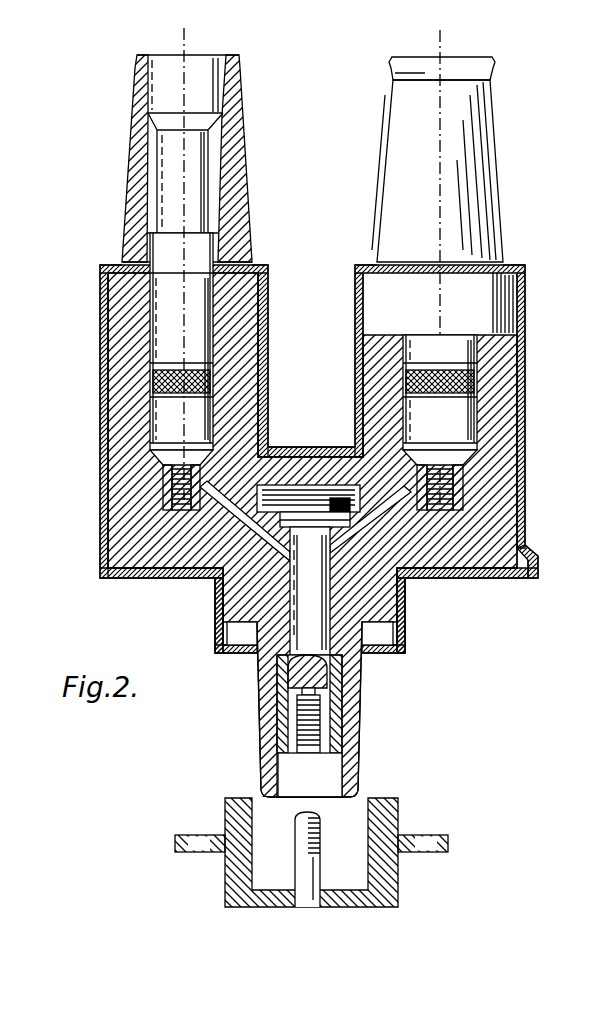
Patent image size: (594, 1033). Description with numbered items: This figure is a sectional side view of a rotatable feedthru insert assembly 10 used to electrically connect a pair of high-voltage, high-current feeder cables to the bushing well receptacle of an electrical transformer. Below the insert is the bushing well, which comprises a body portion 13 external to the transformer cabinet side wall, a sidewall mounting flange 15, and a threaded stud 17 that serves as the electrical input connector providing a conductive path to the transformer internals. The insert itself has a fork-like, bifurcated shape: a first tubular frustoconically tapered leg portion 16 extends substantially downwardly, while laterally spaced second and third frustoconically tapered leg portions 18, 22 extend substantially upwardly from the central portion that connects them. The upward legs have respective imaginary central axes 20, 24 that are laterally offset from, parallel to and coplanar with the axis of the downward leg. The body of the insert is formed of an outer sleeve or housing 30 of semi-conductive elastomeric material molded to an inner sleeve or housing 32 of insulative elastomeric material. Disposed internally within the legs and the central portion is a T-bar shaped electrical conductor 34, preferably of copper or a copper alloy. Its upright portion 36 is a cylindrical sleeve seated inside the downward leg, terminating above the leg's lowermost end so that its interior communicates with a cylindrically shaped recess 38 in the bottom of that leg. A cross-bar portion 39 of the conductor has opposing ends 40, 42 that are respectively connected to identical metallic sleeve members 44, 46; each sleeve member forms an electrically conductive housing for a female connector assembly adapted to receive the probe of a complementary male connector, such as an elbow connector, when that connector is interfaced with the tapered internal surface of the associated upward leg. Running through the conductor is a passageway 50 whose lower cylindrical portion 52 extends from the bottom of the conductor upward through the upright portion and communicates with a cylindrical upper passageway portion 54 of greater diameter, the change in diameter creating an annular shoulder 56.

The rotatable feedthru insert assembly 10 is at (210, 632).
The body portion 13 is at (238, 865).
The sidewall mounting flange 15 is at (450, 852).
The first tubular frustoconically tapered leg portion 16 is at (252, 718).
The threaded stud 17 is at (318, 832).
The second frustoconically tapered leg portion 18 is at (506, 93).
The central axis of second leg portion 20 is at (442, 37).
The third frustoconically tapered leg portion 22 is at (108, 203).
The central axis of third leg portion 24 is at (187, 50).
The outer sleeve or housing 30 is at (528, 425).
The inner sleeve or housing 32 is at (500, 392).
The T-bar shaped electrical conductor 34 is at (367, 523).
The upright portion 36 is at (348, 655).
The cylindrically shaped recess 38 is at (300, 772).
The cross-bar portion 39 is at (272, 447).
The end of cross-bar portion 40 is at (140, 516).
The end of cross-bar portion 42 is at (478, 505).
The metallic sleeve member 44 is at (170, 320).
The metallic sleeve member 46 is at (490, 357).
The passageway 50 is at (282, 662).
The lower cylindrical portion of passageway 52 is at (290, 688).
The upper passageway portion 54 is at (215, 580).
The annular shoulder 56 is at (405, 592).